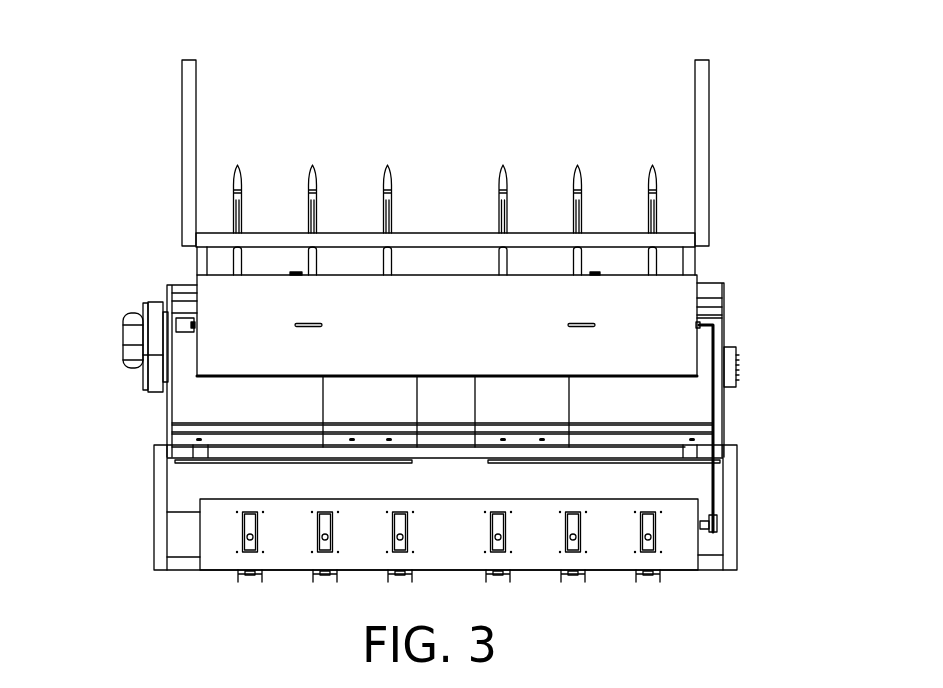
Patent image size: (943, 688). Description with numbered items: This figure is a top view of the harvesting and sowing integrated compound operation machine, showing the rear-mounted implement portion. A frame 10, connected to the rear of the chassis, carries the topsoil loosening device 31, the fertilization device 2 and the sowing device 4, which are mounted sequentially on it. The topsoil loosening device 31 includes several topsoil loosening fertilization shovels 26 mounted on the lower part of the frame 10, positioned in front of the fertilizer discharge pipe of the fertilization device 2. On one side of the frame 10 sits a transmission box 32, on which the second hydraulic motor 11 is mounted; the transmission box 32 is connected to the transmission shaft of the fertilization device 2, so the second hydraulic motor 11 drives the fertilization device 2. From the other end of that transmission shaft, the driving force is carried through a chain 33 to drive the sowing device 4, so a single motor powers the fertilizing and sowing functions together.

The fertilization device 2 is at (447, 188).
The sowing device 4 is at (535, 540).
The frame 10 is at (649, 123).
The second hydraulic motor 11 is at (71, 290).
The topsoil loosening fertilization shovels 26 is at (445, 137).
The topsoil loosening device 31 is at (445, 123).
The transmission box 32 is at (84, 375).
The chain 33 is at (783, 427).